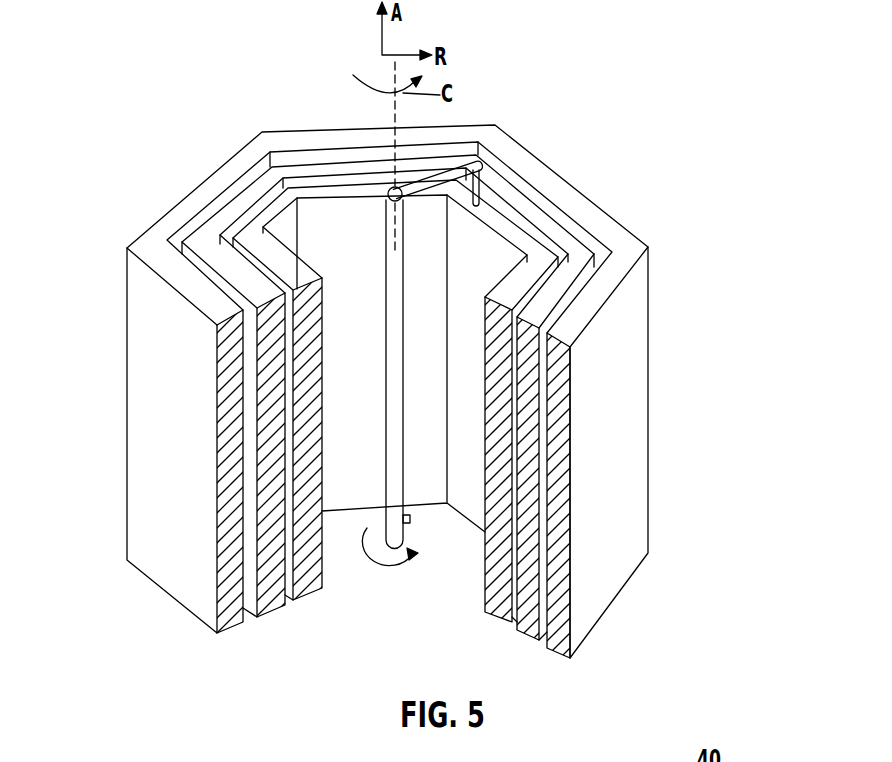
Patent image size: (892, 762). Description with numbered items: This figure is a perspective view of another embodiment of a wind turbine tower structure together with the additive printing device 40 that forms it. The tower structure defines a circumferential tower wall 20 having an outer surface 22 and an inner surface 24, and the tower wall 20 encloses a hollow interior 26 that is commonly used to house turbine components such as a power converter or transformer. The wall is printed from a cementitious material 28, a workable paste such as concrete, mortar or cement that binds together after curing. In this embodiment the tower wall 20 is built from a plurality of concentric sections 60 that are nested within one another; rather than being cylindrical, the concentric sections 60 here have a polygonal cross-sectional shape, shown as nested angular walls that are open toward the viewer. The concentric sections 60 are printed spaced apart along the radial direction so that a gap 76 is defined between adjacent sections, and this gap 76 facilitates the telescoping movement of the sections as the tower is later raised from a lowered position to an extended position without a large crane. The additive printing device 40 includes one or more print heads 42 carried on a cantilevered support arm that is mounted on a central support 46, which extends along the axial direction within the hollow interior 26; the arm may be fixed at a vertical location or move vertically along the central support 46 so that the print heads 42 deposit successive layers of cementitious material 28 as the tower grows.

The circumferential tower wall 20 is at (718, 245).
The outer surface 22 is at (539, 488).
The inner surface 24 is at (487, 556).
The hollow interior 26 is at (371, 287).
The cementitious material 28 is at (560, 545).
The additive printing device 40 is at (526, 135).
The print head 42 is at (459, 167).
The central support 46 is at (393, 418).
The concentric sections 60 is at (270, 488).
The gap 76 is at (252, 620).